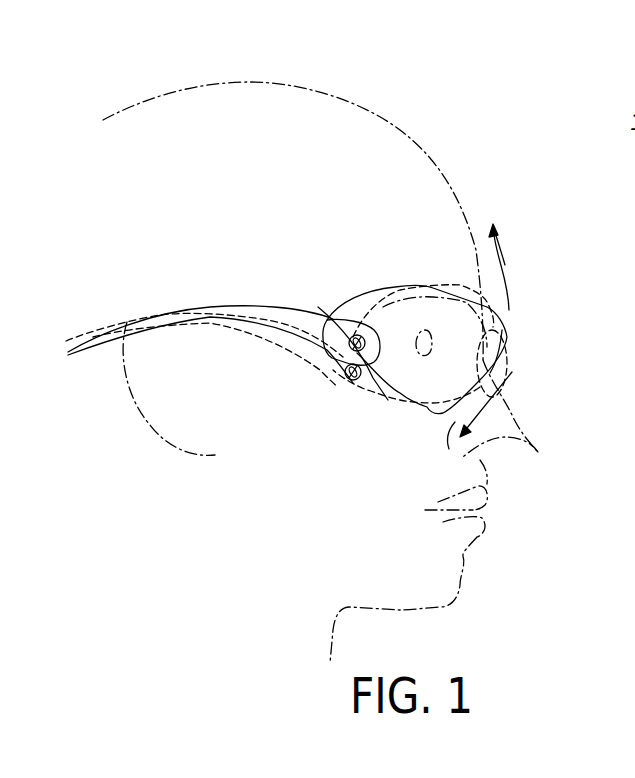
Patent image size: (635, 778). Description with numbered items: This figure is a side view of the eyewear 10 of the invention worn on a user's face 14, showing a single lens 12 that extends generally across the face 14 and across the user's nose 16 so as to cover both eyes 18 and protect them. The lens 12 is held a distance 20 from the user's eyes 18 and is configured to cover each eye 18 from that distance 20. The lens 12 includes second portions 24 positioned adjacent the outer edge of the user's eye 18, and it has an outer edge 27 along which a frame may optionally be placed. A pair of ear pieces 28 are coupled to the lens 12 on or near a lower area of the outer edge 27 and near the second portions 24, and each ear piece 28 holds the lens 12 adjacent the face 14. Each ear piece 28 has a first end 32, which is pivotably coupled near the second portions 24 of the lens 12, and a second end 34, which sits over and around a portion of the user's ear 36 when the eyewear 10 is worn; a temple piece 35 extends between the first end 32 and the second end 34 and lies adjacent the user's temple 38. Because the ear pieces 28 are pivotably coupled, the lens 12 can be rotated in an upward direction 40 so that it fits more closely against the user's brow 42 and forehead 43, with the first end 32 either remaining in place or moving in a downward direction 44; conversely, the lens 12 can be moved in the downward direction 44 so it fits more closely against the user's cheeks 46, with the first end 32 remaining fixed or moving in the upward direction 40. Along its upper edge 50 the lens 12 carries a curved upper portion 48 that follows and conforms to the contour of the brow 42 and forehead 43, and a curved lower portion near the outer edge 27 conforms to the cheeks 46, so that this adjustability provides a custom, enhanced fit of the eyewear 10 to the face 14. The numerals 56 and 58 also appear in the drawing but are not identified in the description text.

The eyewear 10 is at (515, 215).
The lens 12 is at (634, 68).
The face 14 is at (572, 330).
The nose 16 is at (540, 457).
The eyes 18 is at (427, 360).
The distance 20 is at (497, 350).
The second portions 24 is at (363, 318).
The outer edge 27 is at (397, 400).
The ear pieces 28 is at (190, 307).
The first end 32 is at (323, 368).
The second end 34 is at (102, 327).
The temple piece 35 is at (297, 330).
The ear 36 is at (153, 422).
The temple 38 is at (336, 296).
The direction upward 40 is at (509, 307).
The brow 42 is at (450, 283).
The forehead 43 is at (468, 230).
The direction downward 44 is at (500, 400).
The cheeks 46 is at (390, 475).
The curved upper portion 48 is at (502, 330).
The upper edge 50 is at (428, 287).
The temple arm position 56 is at (240, 272).
The head outline 58 is at (150, 118).